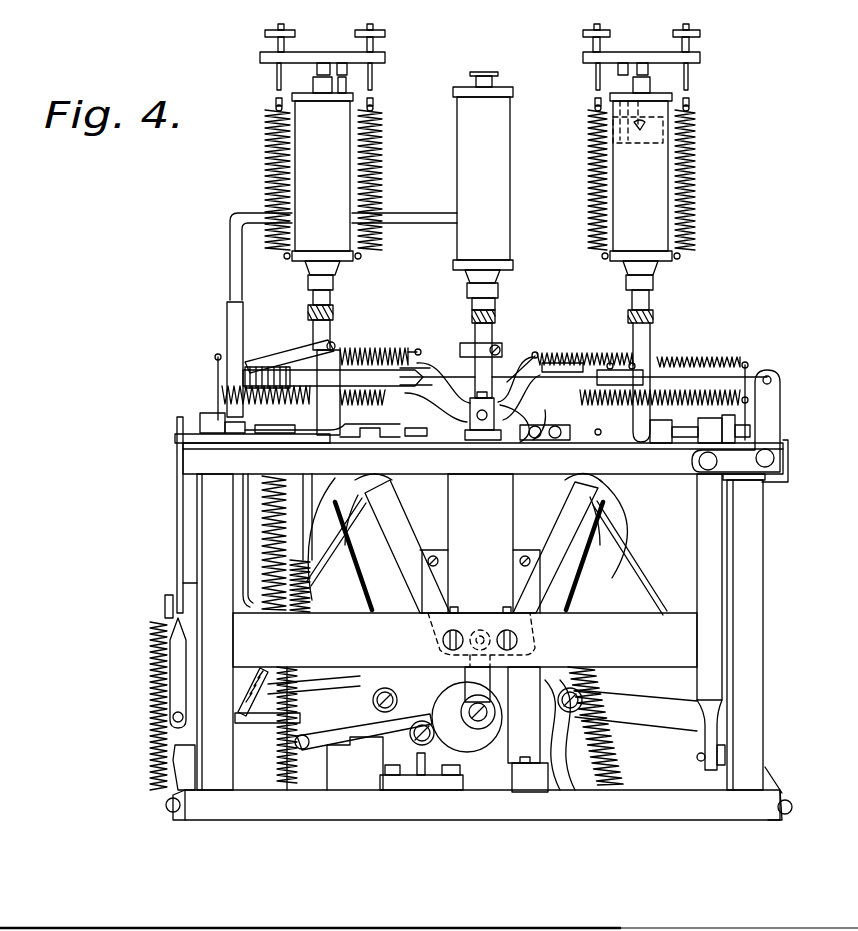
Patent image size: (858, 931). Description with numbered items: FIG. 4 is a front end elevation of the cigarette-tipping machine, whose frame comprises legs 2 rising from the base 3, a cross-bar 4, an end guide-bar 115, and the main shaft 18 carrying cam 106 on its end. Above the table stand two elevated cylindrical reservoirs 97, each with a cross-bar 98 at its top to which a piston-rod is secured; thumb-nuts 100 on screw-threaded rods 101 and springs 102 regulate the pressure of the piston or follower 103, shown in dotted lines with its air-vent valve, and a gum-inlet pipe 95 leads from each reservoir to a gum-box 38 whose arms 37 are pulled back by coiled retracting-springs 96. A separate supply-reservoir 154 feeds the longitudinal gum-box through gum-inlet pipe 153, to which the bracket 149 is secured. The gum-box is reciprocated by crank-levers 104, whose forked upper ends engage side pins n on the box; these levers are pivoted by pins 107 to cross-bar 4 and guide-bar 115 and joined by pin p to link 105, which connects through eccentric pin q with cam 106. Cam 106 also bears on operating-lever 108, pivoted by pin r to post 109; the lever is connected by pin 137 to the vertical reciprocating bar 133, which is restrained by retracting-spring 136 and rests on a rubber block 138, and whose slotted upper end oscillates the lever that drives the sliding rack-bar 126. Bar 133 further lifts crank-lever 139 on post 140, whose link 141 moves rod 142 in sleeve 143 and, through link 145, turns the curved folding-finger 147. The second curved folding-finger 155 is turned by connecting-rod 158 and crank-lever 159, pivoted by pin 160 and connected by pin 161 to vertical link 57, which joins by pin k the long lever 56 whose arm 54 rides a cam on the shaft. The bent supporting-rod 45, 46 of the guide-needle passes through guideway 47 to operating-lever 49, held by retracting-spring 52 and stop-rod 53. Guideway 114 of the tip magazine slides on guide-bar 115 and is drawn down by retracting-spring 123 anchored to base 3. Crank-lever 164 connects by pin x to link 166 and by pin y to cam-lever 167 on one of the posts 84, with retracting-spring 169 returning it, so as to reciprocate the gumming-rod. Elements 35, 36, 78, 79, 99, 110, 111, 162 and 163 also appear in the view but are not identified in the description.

The legs 2 is at (770, 632).
The base 3 is at (168, 810).
The cross-bar 4 is at (465, 640).
The main shaft 18 is at (460, 708).
The spring 35 is at (412, 347).
The spring 36 is at (347, 355).
The arms 37 is at (394, 345).
The reciprocating gum-box 38 is at (526, 434).
The bent supporting-rod 45 is at (404, 199).
The vertical portion of the supporting-rod 46 is at (241, 256).
The guideway 47 is at (227, 318).
The operating-lever 49 is at (336, 667).
The retracting-spring 52 is at (264, 500).
The stop-rod 53 is at (258, 541).
The arm 54 is at (627, 706).
The lever 56 is at (722, 722).
The long link 57 is at (722, 552).
The bar 78 is at (353, 578).
The curved arm 79 is at (636, 516).
The posts 84 is at (571, 772).
The gum-inlet pipe 95 is at (308, 300).
The coiled retracting-springs 96 is at (238, 388).
The cylindrical reservoir 97 is at (482, 184).
The cross-bar 98 is at (322, 52).
The connection 99 is at (313, 76).
The thumb-nuts 100 is at (266, 40).
The screw-threaded rods 101 is at (375, 101).
The springs 102 is at (265, 148).
The piston or follower 103 is at (613, 132).
The crank-levers 104 is at (396, 516).
The link 105 is at (530, 660).
The cam 106 is at (476, 740).
The pins 107 is at (442, 641).
The operating-lever 108 is at (350, 721).
The post 109 is at (412, 778).
The rod 110 is at (660, 583).
The frame bracket 111 is at (505, 458).
The guideway 114 is at (520, 575).
The vertical guide-bar 115 is at (481, 797).
The retracting-spring 123 is at (602, 762).
The sliding rack-bar 126 is at (623, 442).
The vertical reciprocating bar 133 is at (300, 560).
The retracting-spring 136 is at (425, 434).
The pin 137 is at (295, 790).
The rubber block 138 is at (322, 782).
The crank-lever 139 is at (342, 347).
The post 140 is at (327, 403).
The link 141 is at (285, 353).
The reciprocating rod 142 is at (216, 402).
The sleeve or guideway 143 is at (300, 381).
The link 145 is at (445, 360).
The curved folding-finger 147 is at (433, 392).
The bracket 149 is at (497, 375).
The gum-inlet pipe 153 is at (462, 298).
The supply-reservoir 154 is at (483, 177).
The second curved folding-finger 155 is at (512, 420).
The connecting-rod 158 is at (536, 352).
The crank-lever 159 is at (765, 418).
The pin 160 is at (774, 449).
The pin 161 is at (700, 461).
The pivot block 162 is at (477, 424).
The link 163 is at (322, 446).
The crank-lever 164 is at (177, 456).
The link 166 is at (150, 660).
The cam-lever 167 is at (246, 728).
The retracting-spring 169 is at (169, 717).
The pin k is at (697, 757).
The side pins n is at (607, 450).
The pin p is at (480, 630).
The eccentric pin q is at (497, 712).
The pin r is at (408, 740).
The pin x is at (165, 607).
The pin y is at (178, 743).